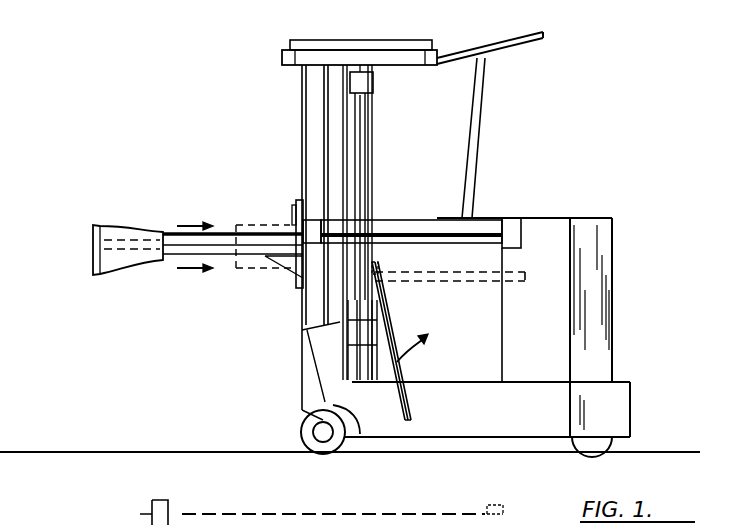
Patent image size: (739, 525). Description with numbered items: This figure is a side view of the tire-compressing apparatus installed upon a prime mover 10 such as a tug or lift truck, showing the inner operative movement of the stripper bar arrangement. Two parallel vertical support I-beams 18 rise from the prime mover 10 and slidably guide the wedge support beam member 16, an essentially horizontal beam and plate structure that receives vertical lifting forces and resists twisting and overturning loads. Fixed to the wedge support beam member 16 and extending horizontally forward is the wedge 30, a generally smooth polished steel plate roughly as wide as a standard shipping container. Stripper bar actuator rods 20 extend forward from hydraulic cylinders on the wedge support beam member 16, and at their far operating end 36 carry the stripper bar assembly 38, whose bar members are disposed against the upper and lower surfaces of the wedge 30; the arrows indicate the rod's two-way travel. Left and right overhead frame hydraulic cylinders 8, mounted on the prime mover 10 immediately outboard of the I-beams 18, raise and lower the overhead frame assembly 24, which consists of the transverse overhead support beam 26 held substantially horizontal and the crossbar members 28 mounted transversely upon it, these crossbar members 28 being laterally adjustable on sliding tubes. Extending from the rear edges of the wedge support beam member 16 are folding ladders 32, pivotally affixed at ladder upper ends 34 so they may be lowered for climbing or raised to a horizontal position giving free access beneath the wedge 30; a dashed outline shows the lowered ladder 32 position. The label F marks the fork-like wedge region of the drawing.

The overhead frame double acting hydraulic cylinder 8 is at (365, 120).
The prime mover 10 is at (556, 218).
The wedge support beam member 16 is at (296, 205).
The vertical support I-beam 18 is at (302, 130).
The stripper bar actuator rod 20 is at (244, 233).
The overhead frame assembly 24 is at (312, 40).
The transverse overhead support beam 26 is at (242, 514).
The crossbar member 28 is at (390, 50).
The wedge 30 is at (236, 262).
The folding ladder 32 is at (460, 272).
The ladder upper end 34 is at (378, 282).
The operating end of stripper bar actuating rod 36 is at (108, 228).
The stripper bar assembly 38 is at (95, 232).
The fork F is at (427, 218).